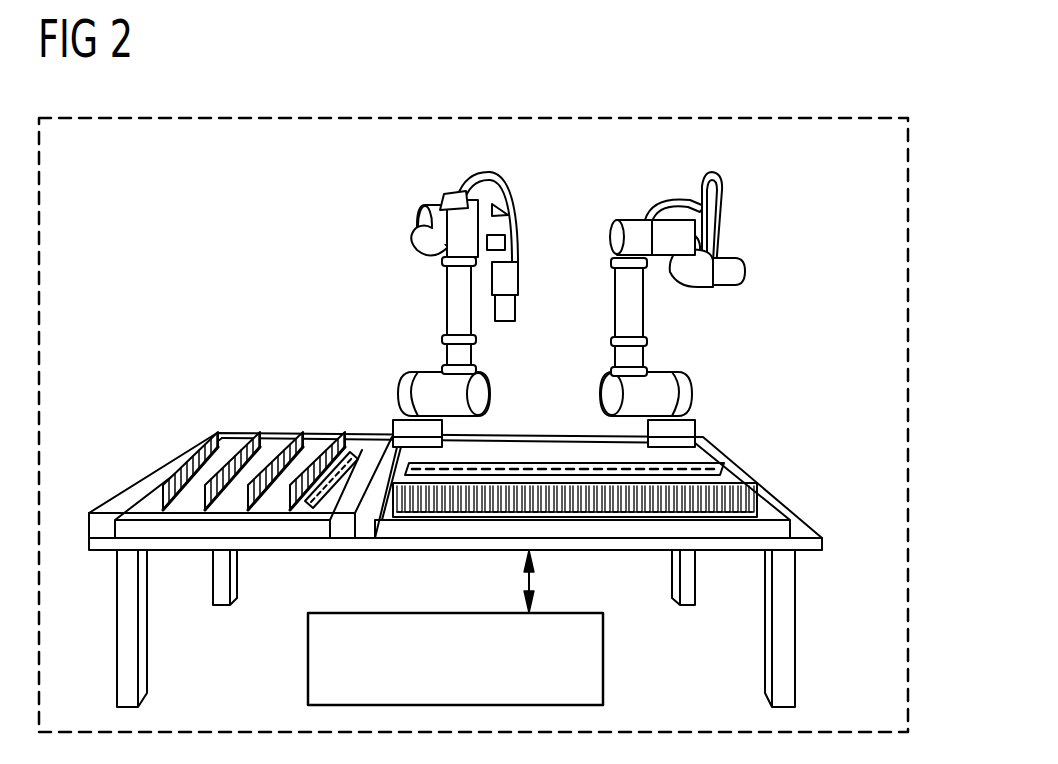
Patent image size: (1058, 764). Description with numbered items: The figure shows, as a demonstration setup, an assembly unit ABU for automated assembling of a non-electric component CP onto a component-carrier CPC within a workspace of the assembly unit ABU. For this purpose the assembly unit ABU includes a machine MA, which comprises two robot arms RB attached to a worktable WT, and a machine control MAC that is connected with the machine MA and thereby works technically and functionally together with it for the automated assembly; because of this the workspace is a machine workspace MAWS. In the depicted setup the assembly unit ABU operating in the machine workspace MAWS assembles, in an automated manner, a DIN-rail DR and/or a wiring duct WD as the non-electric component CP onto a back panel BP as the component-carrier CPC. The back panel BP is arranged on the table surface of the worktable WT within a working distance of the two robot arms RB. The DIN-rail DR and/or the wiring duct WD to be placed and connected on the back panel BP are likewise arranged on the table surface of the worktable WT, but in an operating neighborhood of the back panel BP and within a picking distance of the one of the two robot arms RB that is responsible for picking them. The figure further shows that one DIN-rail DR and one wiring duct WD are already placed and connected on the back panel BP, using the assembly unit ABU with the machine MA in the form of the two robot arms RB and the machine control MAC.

The assembly unit ABU is at (641, 116).
The machine workspace MAWS is at (470, 436).
The machine MA is at (533, 306).
The robot arms RB is at (457, 290).
The worktable WT is at (802, 526).
The wiring duct WD is at (345, 452).
The back panel BP is at (589, 466).
The component-carrier CPC is at (698, 455).
The DIN-rail DR is at (423, 518).
The non-electric component CP is at (292, 508).
The machine control MAC is at (605, 660).